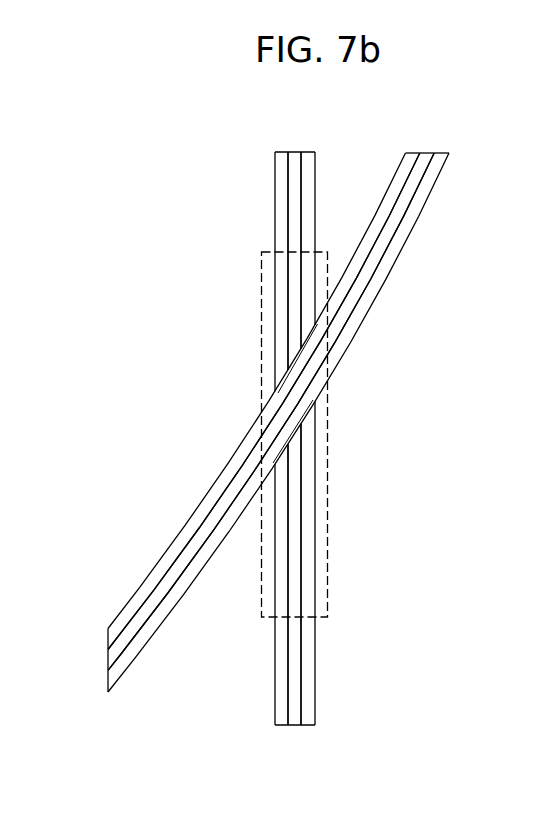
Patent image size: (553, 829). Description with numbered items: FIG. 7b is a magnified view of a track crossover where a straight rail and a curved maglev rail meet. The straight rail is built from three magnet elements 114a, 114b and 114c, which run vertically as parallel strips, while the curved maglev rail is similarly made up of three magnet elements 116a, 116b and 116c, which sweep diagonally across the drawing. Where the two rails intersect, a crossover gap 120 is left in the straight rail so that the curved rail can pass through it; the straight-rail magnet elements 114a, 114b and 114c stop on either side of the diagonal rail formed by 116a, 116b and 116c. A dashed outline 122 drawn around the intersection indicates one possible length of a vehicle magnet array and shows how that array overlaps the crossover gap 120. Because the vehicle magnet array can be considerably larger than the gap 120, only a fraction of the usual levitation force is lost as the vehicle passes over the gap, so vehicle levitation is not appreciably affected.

The magnet element 114a is at (286, 157).
The magnet element 114b is at (298, 182).
The magnet element 114c is at (312, 207).
The magnet element 116a is at (408, 160).
The magnet element 116b is at (412, 183).
The magnet element 116c is at (413, 208).
The crossover gap 120 is at (290, 353).
The outline 122 is at (328, 458).